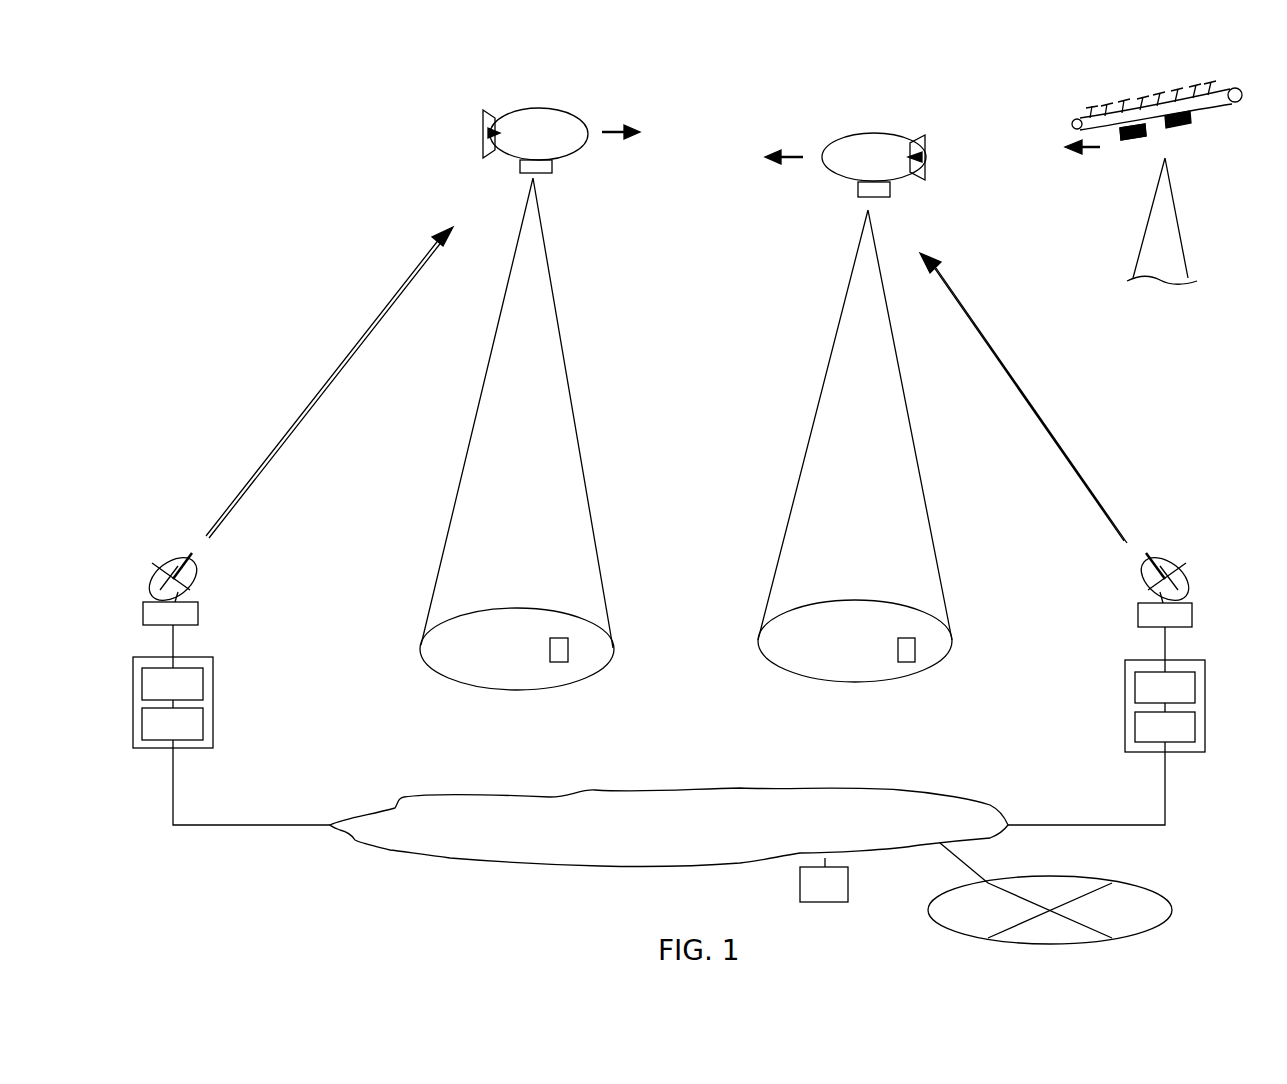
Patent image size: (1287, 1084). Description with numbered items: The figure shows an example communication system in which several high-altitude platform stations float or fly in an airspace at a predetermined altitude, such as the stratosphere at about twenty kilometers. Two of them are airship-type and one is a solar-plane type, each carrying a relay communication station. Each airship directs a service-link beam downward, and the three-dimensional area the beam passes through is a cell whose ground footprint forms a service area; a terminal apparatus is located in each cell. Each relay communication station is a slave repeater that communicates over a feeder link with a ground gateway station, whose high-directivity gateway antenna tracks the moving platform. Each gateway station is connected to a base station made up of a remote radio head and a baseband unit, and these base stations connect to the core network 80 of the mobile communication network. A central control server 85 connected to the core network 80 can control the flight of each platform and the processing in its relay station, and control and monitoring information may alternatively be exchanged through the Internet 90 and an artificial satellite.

The core network 80 is at (450, 860).
The central control server 85 is at (800, 883).
The Internet 90 is at (1160, 893).